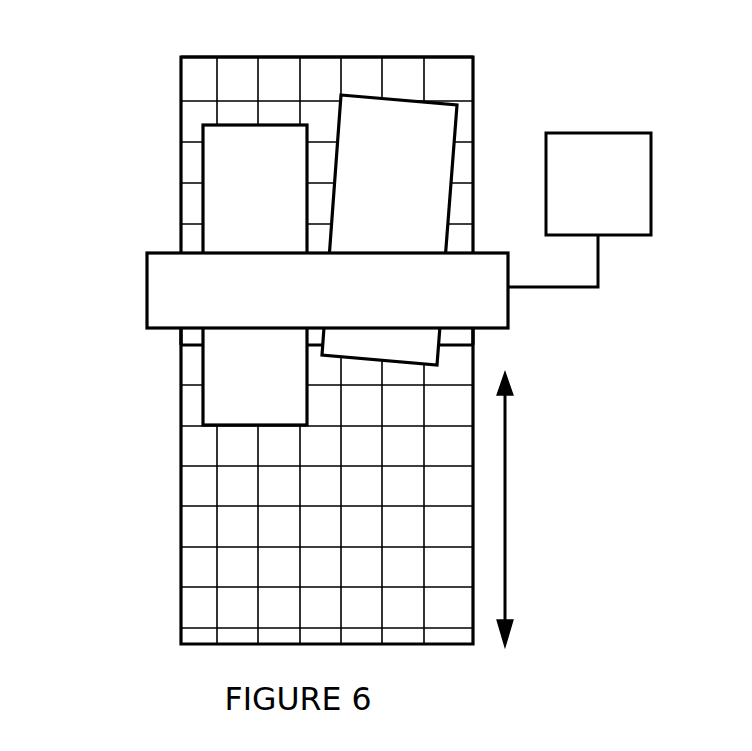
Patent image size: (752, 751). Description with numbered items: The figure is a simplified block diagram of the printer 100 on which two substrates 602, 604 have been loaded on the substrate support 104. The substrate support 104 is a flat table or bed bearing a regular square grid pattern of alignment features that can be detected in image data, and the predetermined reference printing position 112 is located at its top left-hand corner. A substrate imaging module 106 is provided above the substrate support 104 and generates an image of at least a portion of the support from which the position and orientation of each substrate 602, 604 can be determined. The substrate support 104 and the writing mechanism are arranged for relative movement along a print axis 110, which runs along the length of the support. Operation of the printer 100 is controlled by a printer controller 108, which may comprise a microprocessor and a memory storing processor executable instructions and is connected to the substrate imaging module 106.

The printer 100 is at (118, 185).
The substrate support 104 is at (357, 57).
The substrate imaging module 106 is at (185, 347).
The printer controller 108 is at (205, 467).
The print axis 110 is at (506, 597).
The predetermined reference printing position 112 is at (180, 57).
The substrate 602 is at (246, 124).
The substrate 604 is at (435, 143).